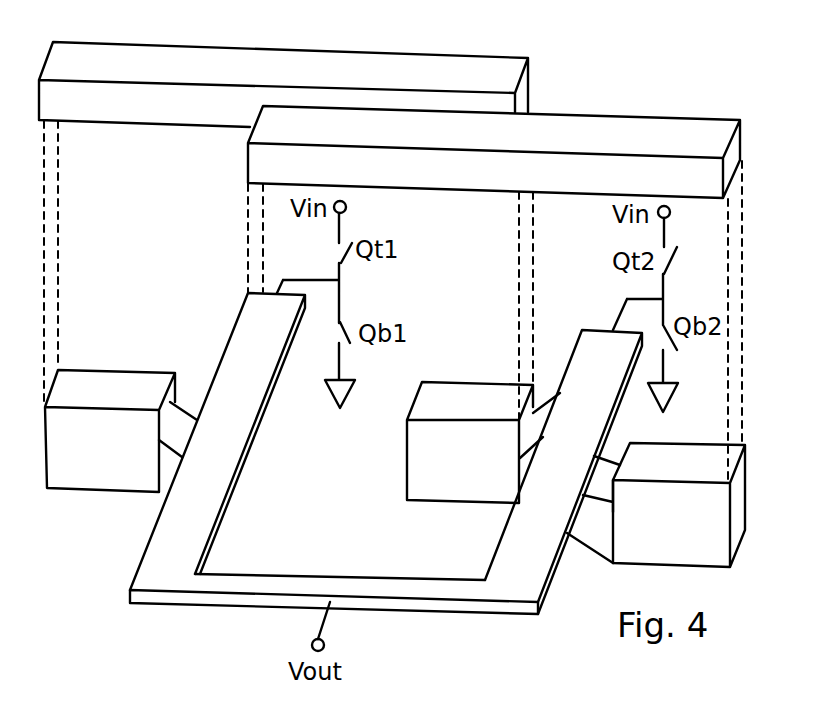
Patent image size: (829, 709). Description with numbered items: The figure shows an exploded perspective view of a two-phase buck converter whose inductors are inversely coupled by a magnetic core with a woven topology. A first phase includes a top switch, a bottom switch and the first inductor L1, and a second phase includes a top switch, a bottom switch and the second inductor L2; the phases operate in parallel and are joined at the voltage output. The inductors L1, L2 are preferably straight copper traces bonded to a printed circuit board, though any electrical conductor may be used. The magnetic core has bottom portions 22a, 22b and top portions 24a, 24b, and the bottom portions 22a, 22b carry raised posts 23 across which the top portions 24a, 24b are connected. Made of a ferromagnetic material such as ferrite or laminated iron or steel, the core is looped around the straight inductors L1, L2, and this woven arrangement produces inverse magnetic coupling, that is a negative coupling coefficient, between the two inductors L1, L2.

The top portion 24a is at (283, 223).
The top portion 24b is at (495, 293).
The bottom portion 22a is at (110, 431).
The bottom portion 22b is at (679, 505).
The raised post 23 is at (172, 403).
The first inductor L1 is at (217, 441).
The second inductor L2 is at (563, 472).